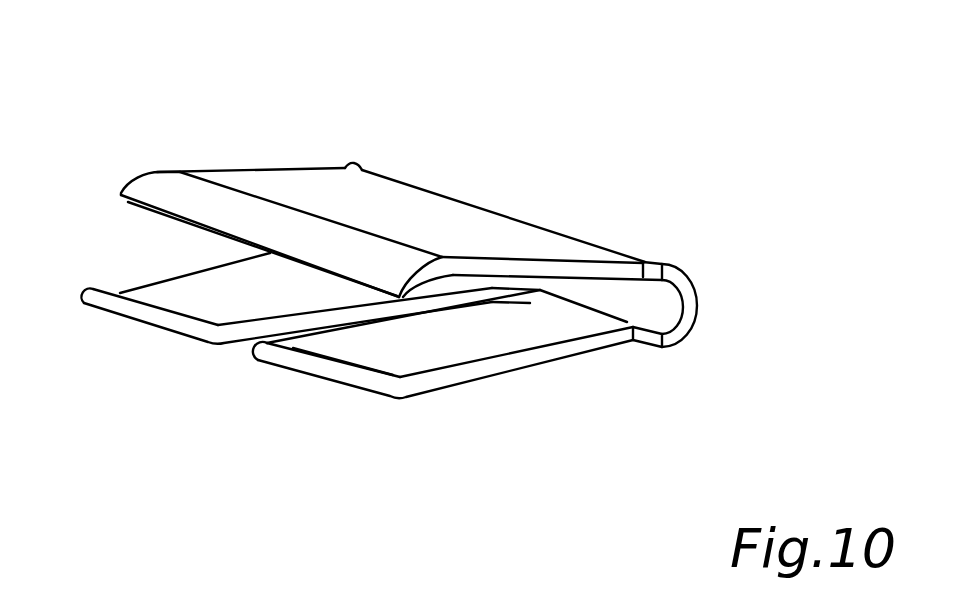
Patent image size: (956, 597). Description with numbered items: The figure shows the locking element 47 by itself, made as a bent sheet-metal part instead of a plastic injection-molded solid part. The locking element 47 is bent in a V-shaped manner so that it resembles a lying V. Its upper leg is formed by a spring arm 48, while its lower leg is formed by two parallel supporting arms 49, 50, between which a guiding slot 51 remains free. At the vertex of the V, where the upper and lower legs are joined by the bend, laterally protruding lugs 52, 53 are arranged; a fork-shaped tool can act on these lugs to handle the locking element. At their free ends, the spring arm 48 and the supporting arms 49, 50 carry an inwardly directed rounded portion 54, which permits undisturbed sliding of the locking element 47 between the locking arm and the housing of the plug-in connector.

The locking element 47 is at (592, 181).
The spring arm 48 is at (423, 210).
The supporting arm 49 is at (203, 298).
The supporting arm 50 is at (458, 355).
The guiding slot 51 is at (363, 317).
The lug 52 is at (342, 164).
The lug 53 is at (663, 310).
The rounded portion 54 is at (142, 195).